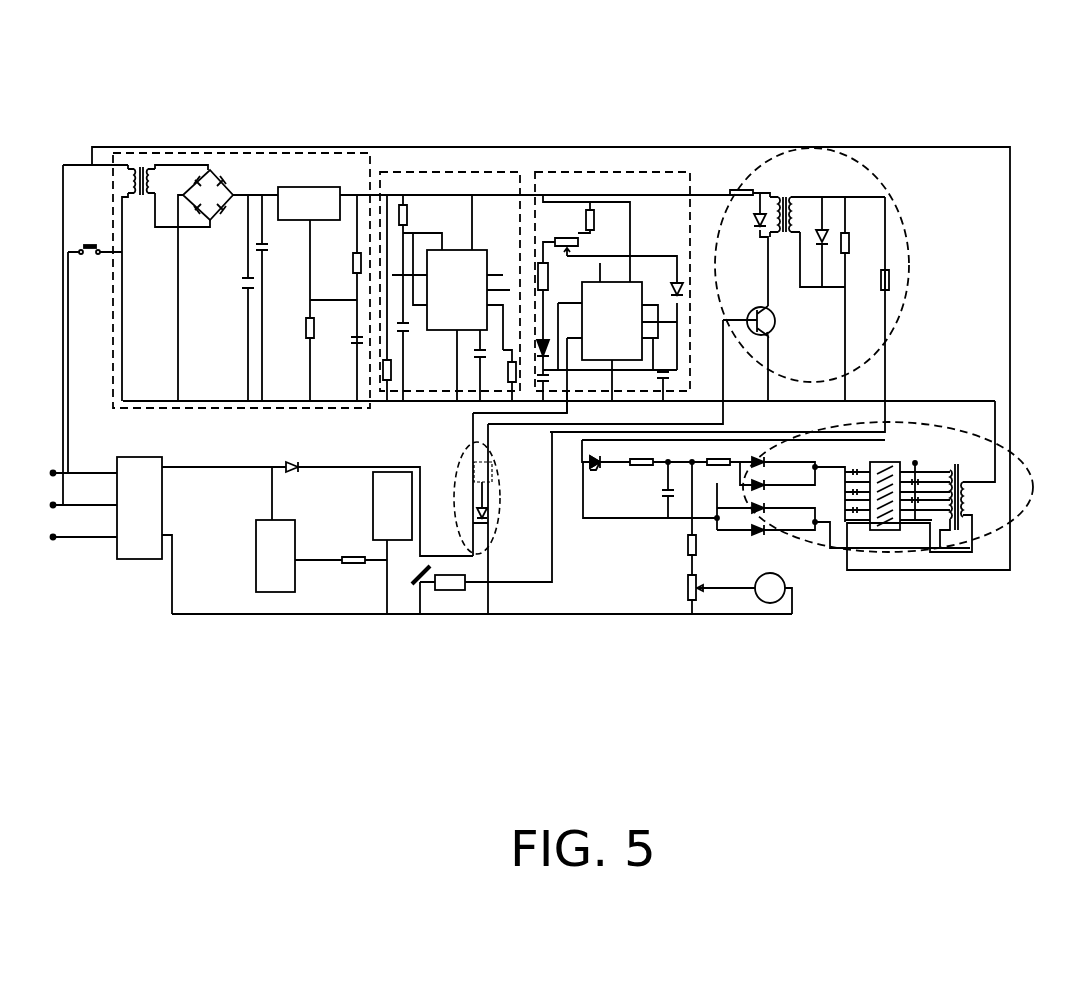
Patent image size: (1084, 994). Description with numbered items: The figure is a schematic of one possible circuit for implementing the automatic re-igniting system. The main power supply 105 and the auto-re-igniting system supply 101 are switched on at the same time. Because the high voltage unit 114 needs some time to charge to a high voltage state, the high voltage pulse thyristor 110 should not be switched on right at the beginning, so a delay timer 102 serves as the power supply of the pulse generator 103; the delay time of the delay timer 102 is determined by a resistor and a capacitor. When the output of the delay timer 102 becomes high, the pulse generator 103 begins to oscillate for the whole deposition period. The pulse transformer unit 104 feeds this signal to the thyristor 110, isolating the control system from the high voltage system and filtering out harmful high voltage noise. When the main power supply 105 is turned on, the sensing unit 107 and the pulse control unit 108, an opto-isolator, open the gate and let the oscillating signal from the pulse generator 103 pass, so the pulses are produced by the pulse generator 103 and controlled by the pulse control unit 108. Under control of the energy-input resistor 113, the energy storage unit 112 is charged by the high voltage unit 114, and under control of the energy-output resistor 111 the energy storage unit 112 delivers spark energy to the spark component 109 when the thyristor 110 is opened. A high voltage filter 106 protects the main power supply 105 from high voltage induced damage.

The auto-re-igniting system supply 101 is at (238, 162).
The delay timer 102 is at (442, 190).
The pulse generator 103 is at (600, 170).
The pulse transformer unit 104 is at (840, 172).
The main power supply 105 is at (137, 480).
The high voltage filter 106 is at (377, 467).
The sensing unit 107 is at (282, 557).
The pulse control unit (opto-isolator) 108 is at (483, 510).
The spark component 109 is at (447, 583).
The high voltage pulse thyristor 110 is at (595, 464).
The energy-output resistor 111 is at (640, 463).
The energy storage unit 112 is at (668, 493).
The energy-input resistor 113 is at (765, 532).
The high voltage unit 114 is at (880, 545).